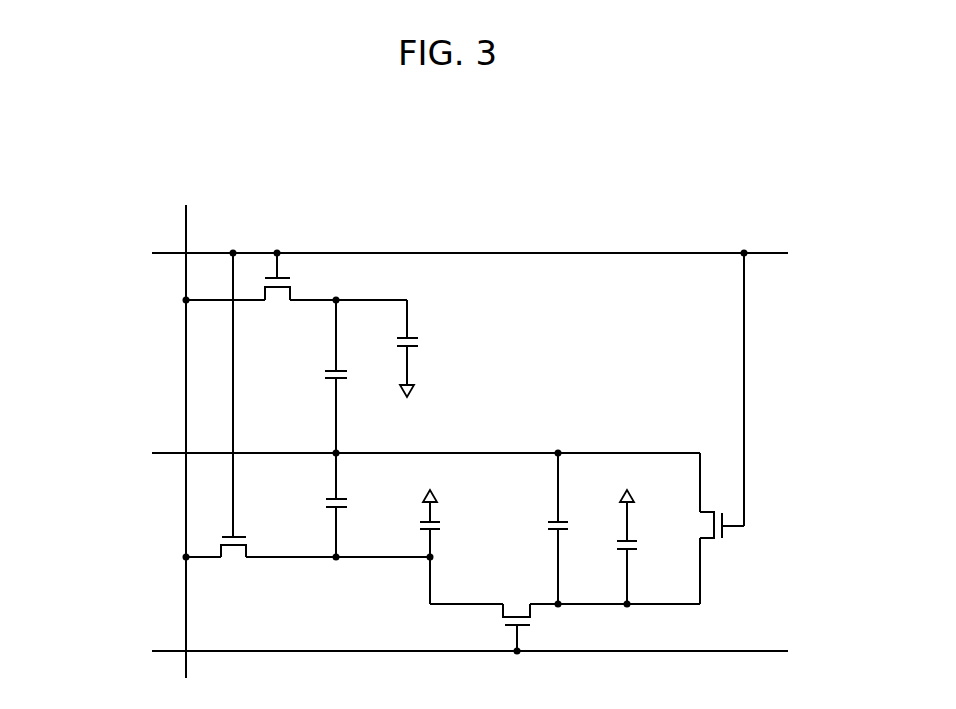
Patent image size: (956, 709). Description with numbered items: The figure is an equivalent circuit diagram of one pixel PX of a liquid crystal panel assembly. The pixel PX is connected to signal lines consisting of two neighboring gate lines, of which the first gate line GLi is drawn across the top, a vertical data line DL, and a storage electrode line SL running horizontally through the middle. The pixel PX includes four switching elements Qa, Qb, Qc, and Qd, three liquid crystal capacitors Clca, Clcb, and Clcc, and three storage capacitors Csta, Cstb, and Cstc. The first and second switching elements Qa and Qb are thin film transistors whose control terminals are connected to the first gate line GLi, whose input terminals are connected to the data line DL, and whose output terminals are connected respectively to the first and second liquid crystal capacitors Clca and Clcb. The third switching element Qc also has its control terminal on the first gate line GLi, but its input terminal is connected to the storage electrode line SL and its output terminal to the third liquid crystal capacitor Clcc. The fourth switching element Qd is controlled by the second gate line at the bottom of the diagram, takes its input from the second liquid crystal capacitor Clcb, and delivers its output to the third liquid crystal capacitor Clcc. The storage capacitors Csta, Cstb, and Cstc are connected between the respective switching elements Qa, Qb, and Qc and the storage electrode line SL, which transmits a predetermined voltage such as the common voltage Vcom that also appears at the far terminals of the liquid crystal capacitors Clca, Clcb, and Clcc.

The data line DL is at (185, 429).
The first gate line GLi is at (454, 253).
The storage electrode line SL is at (412, 453).
The pixel PX is at (633, 209).
The first switching element Qa is at (277, 288).
The second switching element Qb is at (233, 560).
The third switching element Qc is at (707, 396).
The fourth switching element Qd is at (516, 613).
The first storage capacitor Csta is at (314, 376).
The second storage capacitor Cstb is at (314, 505).
The third storage capacitor Cstc is at (536, 528).
The first liquid crystal capacitor Clca is at (386, 342).
The second liquid crystal capacitor Clcb is at (409, 553).
The third liquid crystal capacitor Clcc is at (606, 553).
The common voltage Vcom is at (516, 443).